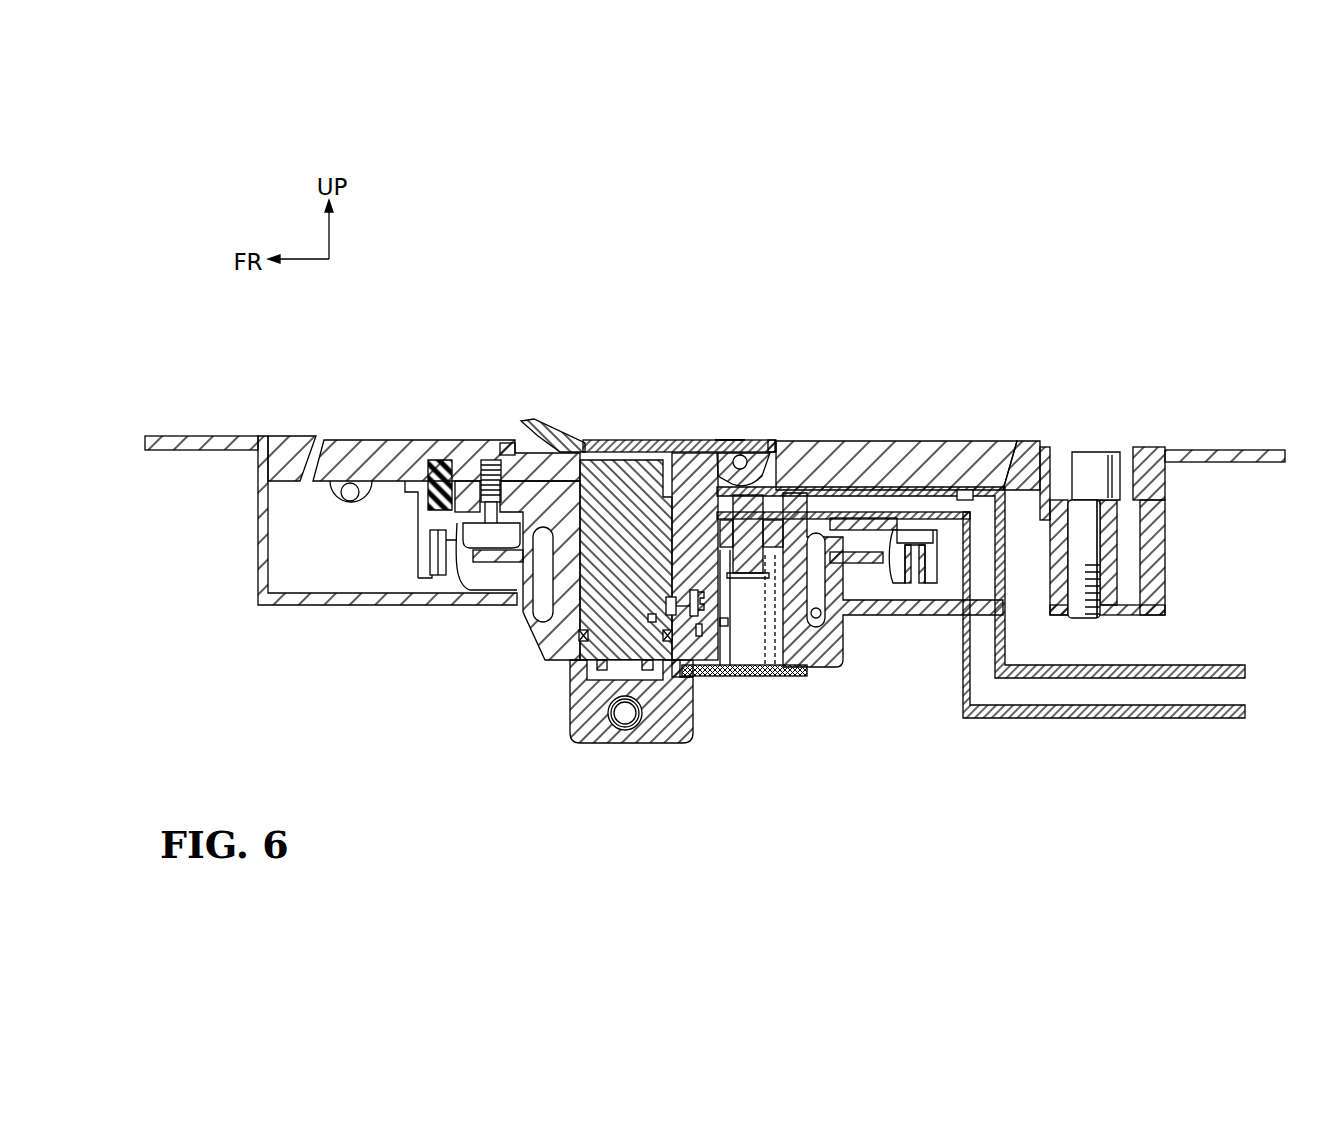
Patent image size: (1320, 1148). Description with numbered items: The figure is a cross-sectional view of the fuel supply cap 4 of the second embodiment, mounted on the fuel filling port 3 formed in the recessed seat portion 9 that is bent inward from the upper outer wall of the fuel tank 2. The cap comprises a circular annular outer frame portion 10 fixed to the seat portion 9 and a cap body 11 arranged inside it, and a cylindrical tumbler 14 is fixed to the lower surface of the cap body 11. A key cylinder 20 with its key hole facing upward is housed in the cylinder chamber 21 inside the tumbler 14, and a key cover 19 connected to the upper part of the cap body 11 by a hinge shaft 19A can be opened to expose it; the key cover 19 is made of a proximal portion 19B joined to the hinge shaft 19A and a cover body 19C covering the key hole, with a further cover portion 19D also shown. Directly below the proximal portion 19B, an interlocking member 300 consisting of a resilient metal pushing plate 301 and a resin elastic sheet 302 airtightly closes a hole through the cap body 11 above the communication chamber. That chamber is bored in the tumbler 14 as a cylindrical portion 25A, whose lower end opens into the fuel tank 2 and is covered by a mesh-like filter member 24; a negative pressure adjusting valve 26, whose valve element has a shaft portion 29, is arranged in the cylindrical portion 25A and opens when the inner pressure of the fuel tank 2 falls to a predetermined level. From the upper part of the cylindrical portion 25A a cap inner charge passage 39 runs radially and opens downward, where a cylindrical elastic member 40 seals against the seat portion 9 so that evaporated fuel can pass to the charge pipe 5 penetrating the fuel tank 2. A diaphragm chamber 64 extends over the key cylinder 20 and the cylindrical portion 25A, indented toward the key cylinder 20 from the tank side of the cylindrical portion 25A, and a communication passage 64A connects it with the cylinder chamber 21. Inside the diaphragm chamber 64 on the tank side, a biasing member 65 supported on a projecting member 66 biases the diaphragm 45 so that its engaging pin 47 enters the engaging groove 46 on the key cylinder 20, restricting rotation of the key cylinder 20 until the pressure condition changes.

The fuel tank 2 is at (195, 436).
The fuel filling port 3 is at (521, 616).
The fuel supply cap 4 is at (627, 473).
The charge pipe 5 is at (1067, 720).
The seat portion 9 is at (358, 605).
The outer frame portion 10 is at (295, 436).
The cap body 11 is at (405, 436).
The tumbler 14 is at (548, 655).
The key cover 19 is at (671, 491).
The hinge shaft 19A is at (728, 440).
The proximal portion 19B is at (740, 440).
The cover body 19C is at (652, 440).
The cover end portion 19D is at (775, 440).
The key cylinder 20 is at (626, 450).
The cylinder chamber 21 is at (578, 441).
The filter member 24 is at (795, 678).
The cylindrical portion 25A is at (763, 680).
The negative pressure adjusting valve 26 is at (822, 612).
The shaft portion 29 is at (838, 615).
The cap inner charge passage 39 is at (962, 497).
The cylindrical elastic member 40 is at (1012, 540).
The diaphragm 45 is at (707, 608).
The engaging groove 46 is at (668, 612).
The engaging pin 47 is at (681, 618).
The diaphragm chamber 64 is at (672, 590).
The communication passage 64A is at (653, 620).
The biasing member 65 is at (701, 630).
The projecting member 66 is at (724, 622).
The interlocking member 300 is at (981, 503).
The pushing plate 301 is at (778, 446).
The elastic sheet 302 is at (812, 446).